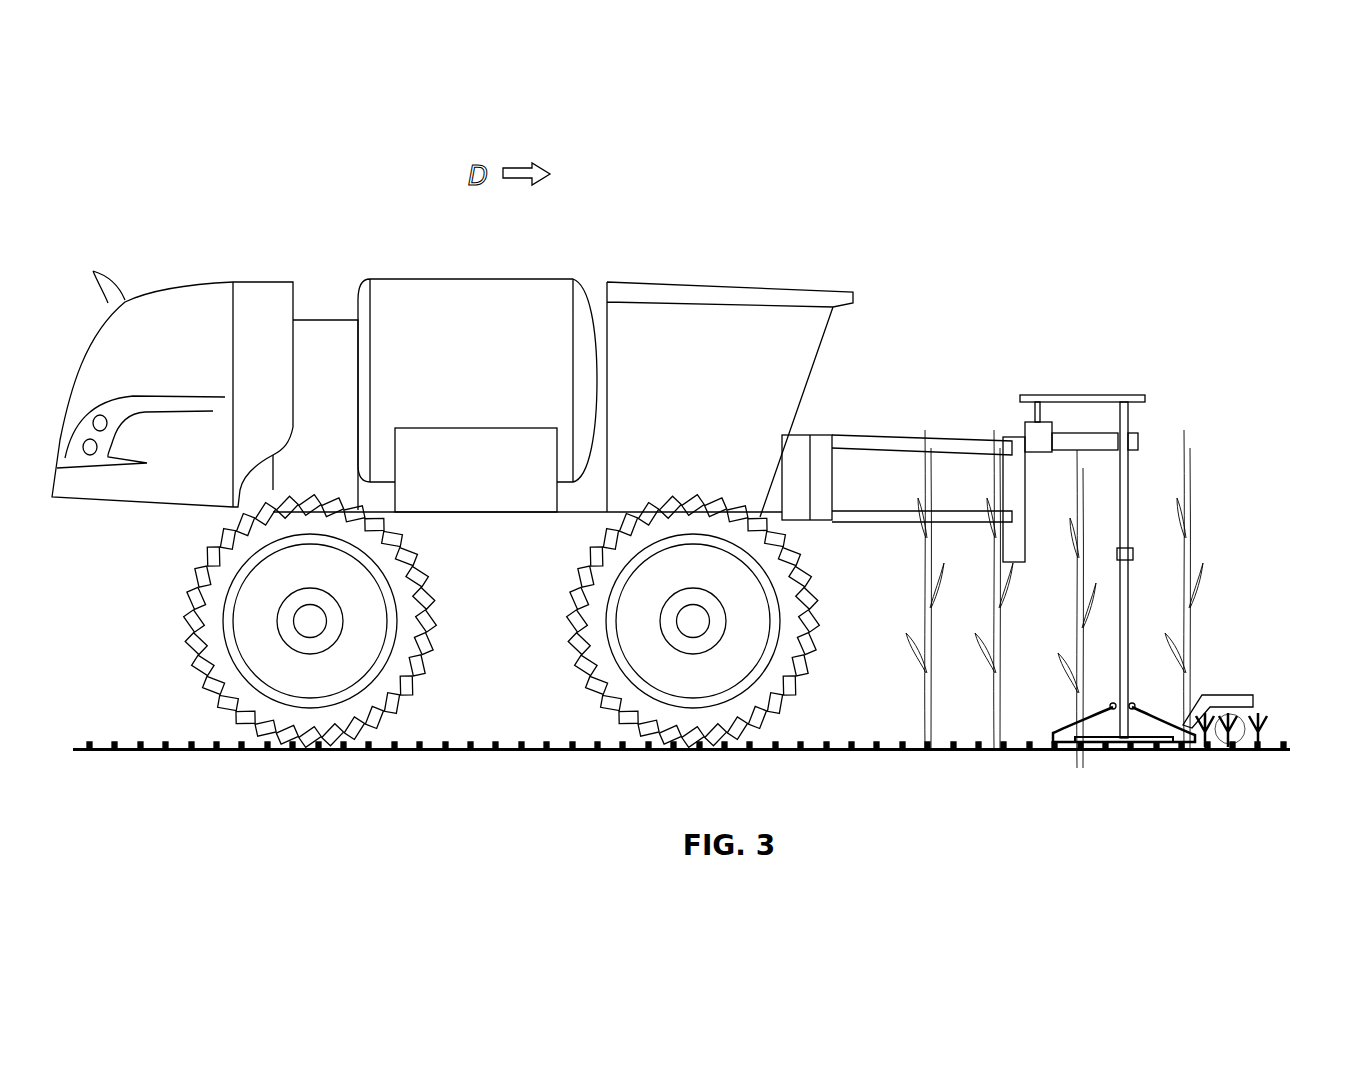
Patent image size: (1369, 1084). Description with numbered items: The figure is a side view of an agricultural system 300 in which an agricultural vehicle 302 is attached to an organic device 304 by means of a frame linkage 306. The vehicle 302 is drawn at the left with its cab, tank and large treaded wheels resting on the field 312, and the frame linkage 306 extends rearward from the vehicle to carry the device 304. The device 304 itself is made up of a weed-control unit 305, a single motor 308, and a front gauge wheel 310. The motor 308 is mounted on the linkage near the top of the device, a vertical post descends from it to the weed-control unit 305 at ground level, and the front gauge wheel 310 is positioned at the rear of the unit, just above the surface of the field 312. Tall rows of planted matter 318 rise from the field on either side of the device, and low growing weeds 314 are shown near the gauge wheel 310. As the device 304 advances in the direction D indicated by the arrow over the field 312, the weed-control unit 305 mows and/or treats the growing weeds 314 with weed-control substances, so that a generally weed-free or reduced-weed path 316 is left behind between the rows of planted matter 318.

The agricultural system 300 is at (833, 258).
The agricultural vehicle 302 is at (398, 300).
The organic device 304 is at (1128, 592).
The weed-control unit 305 is at (1120, 748).
The frame linkage 306 is at (893, 442).
The single motor 308 is at (1032, 428).
The front gauge wheel 310 is at (1213, 748).
The field 312 is at (818, 785).
The growing weeds 314 is at (1265, 744).
The weed-free or reduced-weed path 316 is at (907, 745).
The planted matter 318 is at (1188, 468).